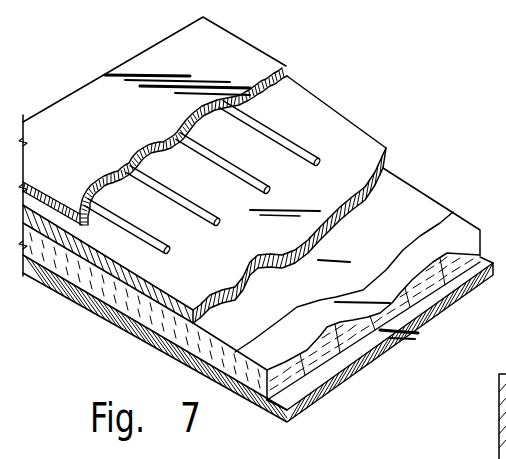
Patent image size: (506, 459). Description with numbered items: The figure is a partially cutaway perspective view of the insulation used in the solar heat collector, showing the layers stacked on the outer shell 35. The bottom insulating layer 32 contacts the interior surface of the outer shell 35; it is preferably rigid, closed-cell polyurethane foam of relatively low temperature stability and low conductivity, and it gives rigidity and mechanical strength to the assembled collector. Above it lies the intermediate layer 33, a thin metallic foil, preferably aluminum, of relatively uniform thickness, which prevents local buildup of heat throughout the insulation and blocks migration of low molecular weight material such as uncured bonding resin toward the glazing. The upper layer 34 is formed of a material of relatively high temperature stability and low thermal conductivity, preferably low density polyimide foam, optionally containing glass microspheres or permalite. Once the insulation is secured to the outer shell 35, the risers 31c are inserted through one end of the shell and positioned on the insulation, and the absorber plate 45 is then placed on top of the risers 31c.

The absorber plate 45 is at (258, 82).
The risers 31c is at (296, 148).
The upper layer 34 is at (385, 163).
The intermediate layer 33 is at (424, 206).
The bottom insulating layer 32 is at (416, 307).
The outer shell 35 is at (349, 378).